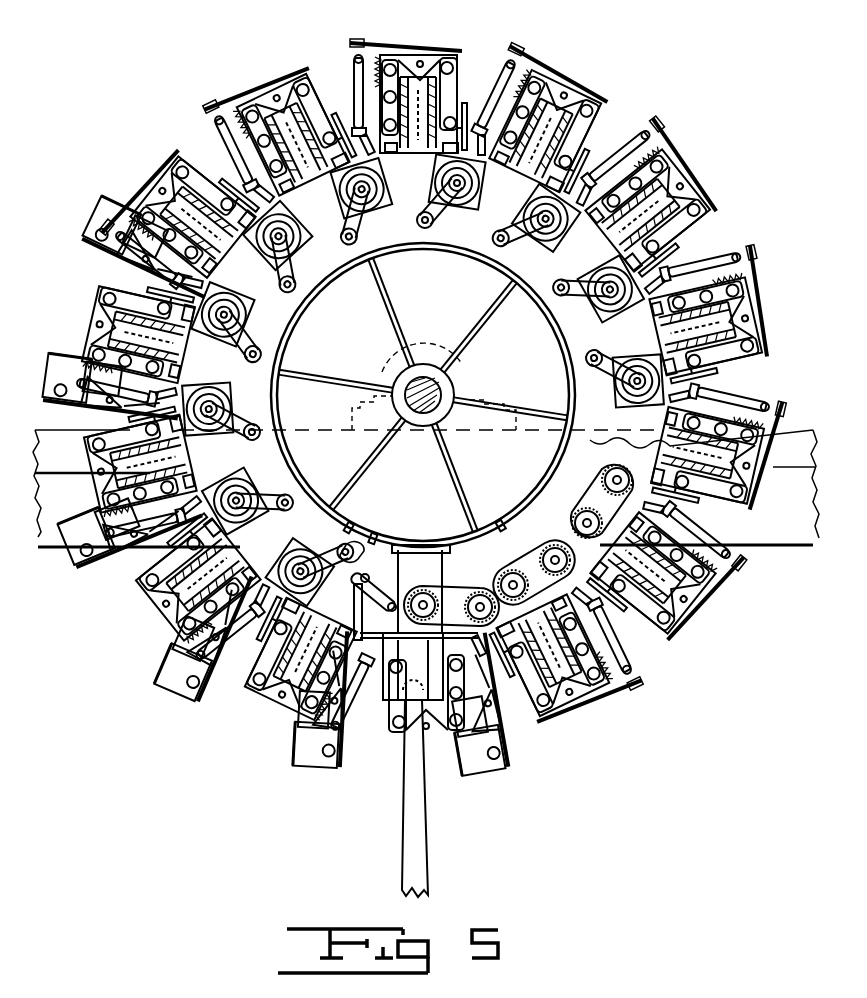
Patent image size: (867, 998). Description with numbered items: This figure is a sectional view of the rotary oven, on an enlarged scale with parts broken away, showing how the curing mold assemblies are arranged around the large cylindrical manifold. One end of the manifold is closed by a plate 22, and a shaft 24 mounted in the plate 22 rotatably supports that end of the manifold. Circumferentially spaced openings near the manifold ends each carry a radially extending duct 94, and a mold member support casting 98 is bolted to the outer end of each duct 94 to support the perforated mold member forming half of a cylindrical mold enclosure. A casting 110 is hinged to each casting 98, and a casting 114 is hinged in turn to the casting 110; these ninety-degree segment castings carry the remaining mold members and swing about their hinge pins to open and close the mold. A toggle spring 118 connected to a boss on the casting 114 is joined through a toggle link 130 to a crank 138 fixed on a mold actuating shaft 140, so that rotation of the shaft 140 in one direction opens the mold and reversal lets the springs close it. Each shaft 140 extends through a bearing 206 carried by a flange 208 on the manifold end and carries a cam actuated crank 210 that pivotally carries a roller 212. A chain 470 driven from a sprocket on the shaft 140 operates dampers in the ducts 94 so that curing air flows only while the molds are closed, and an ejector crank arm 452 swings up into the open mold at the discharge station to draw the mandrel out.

The plate 22 is at (440, 274).
The shaft 24 is at (452, 392).
The duct 94 is at (528, 492).
The mold member support casting 98 is at (402, 154).
The casting 110 is at (400, 58).
The casting 114 is at (314, 64).
The toggle spring 118 is at (264, 72).
The toggle link 130 is at (354, 64).
The crank 138 is at (390, 576).
The mold actuating shaft 140 is at (374, 184).
The bearing 206 is at (385, 209).
The flange 208 is at (273, 356).
The cam actuated crank 210 is at (361, 228).
The roller 212 is at (376, 274).
The ejector crank arm 452 is at (417, 826).
The chain 470 is at (600, 478).